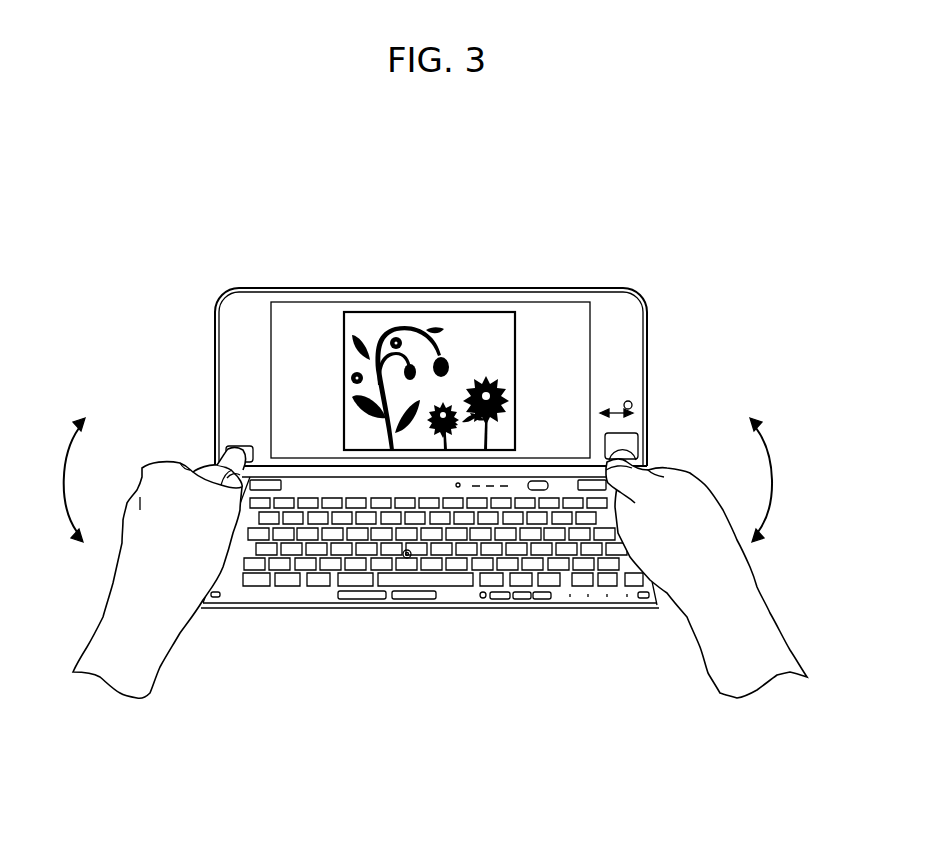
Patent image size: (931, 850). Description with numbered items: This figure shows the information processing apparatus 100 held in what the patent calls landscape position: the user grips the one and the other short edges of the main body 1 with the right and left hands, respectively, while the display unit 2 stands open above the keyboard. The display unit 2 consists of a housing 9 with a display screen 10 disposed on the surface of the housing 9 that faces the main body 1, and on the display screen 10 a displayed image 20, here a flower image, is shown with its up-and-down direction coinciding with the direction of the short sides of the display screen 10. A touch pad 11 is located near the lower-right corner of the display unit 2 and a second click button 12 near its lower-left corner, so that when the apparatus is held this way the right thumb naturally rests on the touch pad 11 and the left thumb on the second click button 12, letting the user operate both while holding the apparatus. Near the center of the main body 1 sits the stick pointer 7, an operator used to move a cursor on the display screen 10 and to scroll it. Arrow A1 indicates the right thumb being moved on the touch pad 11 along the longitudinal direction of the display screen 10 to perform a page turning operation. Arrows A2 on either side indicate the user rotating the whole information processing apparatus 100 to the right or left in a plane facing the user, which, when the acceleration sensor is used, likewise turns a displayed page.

The information processing apparatus 100 is at (539, 180).
The main body 1 is at (487, 605).
The display unit 2 is at (351, 291).
The stick pointer 7 is at (404, 560).
The housing 9 is at (647, 325).
The display screen 10 is at (560, 305).
The displayed image 20 is at (398, 316).
The touch pad 11 is at (633, 440).
The second click button 12 is at (236, 447).
The arrow A1 is at (619, 404).
The arrow A2 is at (425, 480).